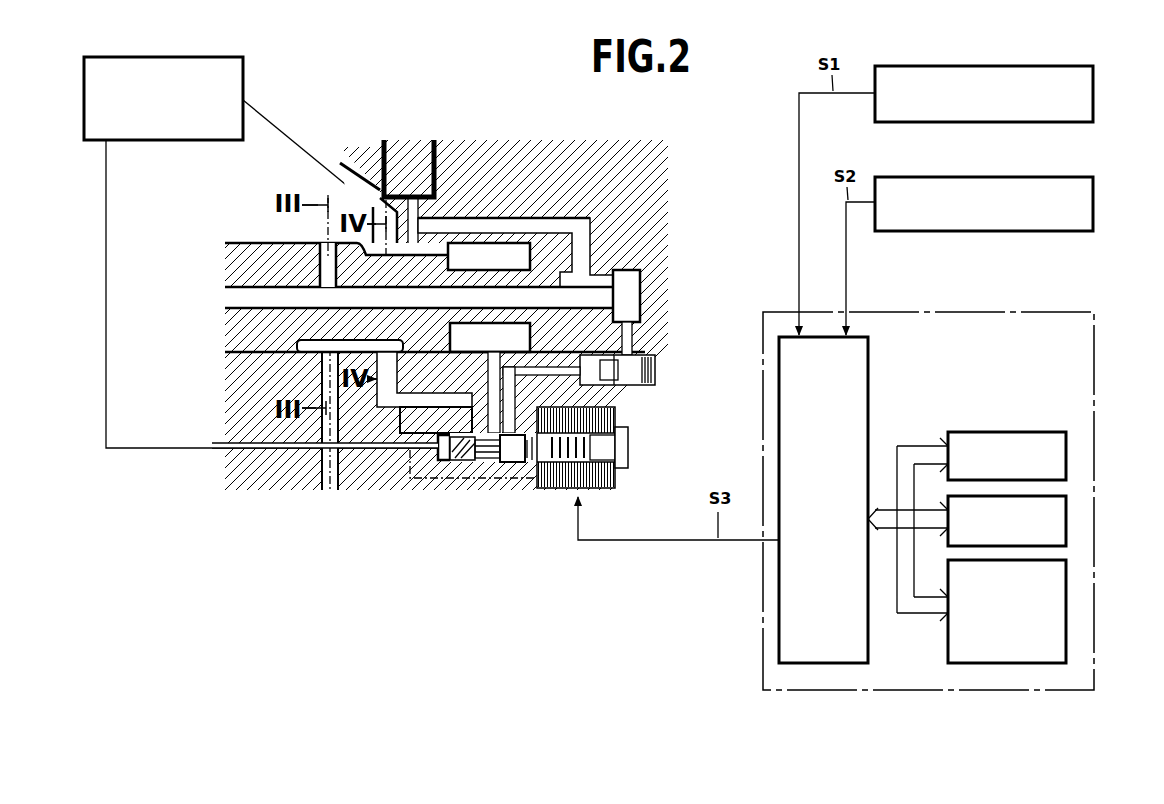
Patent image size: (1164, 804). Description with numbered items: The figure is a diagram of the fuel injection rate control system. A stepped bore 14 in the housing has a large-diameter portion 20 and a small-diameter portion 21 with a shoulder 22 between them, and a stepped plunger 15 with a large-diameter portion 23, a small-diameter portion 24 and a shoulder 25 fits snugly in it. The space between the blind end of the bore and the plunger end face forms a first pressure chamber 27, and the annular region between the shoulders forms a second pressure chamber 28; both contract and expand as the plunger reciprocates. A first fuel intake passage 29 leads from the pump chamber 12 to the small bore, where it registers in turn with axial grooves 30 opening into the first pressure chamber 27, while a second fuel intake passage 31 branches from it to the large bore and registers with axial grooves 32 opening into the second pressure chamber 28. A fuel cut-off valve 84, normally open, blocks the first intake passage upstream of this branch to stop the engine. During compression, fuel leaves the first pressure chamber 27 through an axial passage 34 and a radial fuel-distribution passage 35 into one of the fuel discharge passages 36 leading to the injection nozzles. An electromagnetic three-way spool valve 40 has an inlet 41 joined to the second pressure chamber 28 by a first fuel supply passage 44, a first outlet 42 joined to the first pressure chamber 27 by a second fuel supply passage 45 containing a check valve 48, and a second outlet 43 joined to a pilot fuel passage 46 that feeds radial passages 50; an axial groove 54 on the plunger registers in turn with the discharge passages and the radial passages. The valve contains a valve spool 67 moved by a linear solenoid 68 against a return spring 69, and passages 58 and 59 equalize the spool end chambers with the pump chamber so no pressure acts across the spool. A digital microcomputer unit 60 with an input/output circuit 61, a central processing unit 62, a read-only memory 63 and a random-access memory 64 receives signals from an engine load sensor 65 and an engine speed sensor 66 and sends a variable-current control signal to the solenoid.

The pump chamber 12 is at (243, 75).
The bore 14 is at (255, 347).
The plunger 15 is at (218, 344).
The large-diameter portion of bore 20 is at (242, 243).
The small-diameter portion of bore 21 is at (626, 257).
The shoulder of bore 22 is at (541, 238).
The large-diameter portion of plunger 23 is at (253, 263).
The small-diameter portion of plunger 24 is at (615, 313).
The shoulder of plunger 25 is at (457, 262).
The first pressure chamber 27 is at (632, 278).
The second pressure chamber 28 is at (493, 252).
The first fuel intake passage 29 is at (361, 170).
The axial grooves 30 is at (586, 268).
The second fuel intake passage 31 is at (413, 205).
The axial grooves 32 is at (436, 250).
The axial passage 34 is at (430, 288).
The radial fuel-distribution passage 35 is at (300, 243).
The fuel discharge passages 36 is at (307, 248).
The electromagnetic three-way spool valve 40 is at (629, 484).
The inlet 41 is at (503, 425).
The first outlet 42 is at (531, 437).
The second outlet 43 is at (444, 458).
The first fuel supply passage 44 is at (492, 462).
The second fuel supply passage 45 is at (515, 388).
The pilot fuel passage 46 is at (385, 395).
The check valve 48 is at (618, 358).
The radial passages 50 is at (400, 393).
The axial groove 54 is at (303, 345).
The passage 58 is at (437, 448).
The passage 59 is at (468, 480).
The digital microcomputer unit 60 is at (766, 691).
The input/output circuit 61 is at (870, 376).
The central processing unit 62 is at (1066, 592).
The read-only memory 63 is at (1066, 522).
The random-access memory 64 is at (1066, 457).
The engine load sensor 65 is at (1095, 95).
The engine speed sensor 66 is at (1095, 205).
The valve spool 67 is at (517, 455).
The linear solenoid 68 is at (607, 415).
The return spring 69 is at (582, 448).
The fuel cut-off valve 84 is at (416, 138).